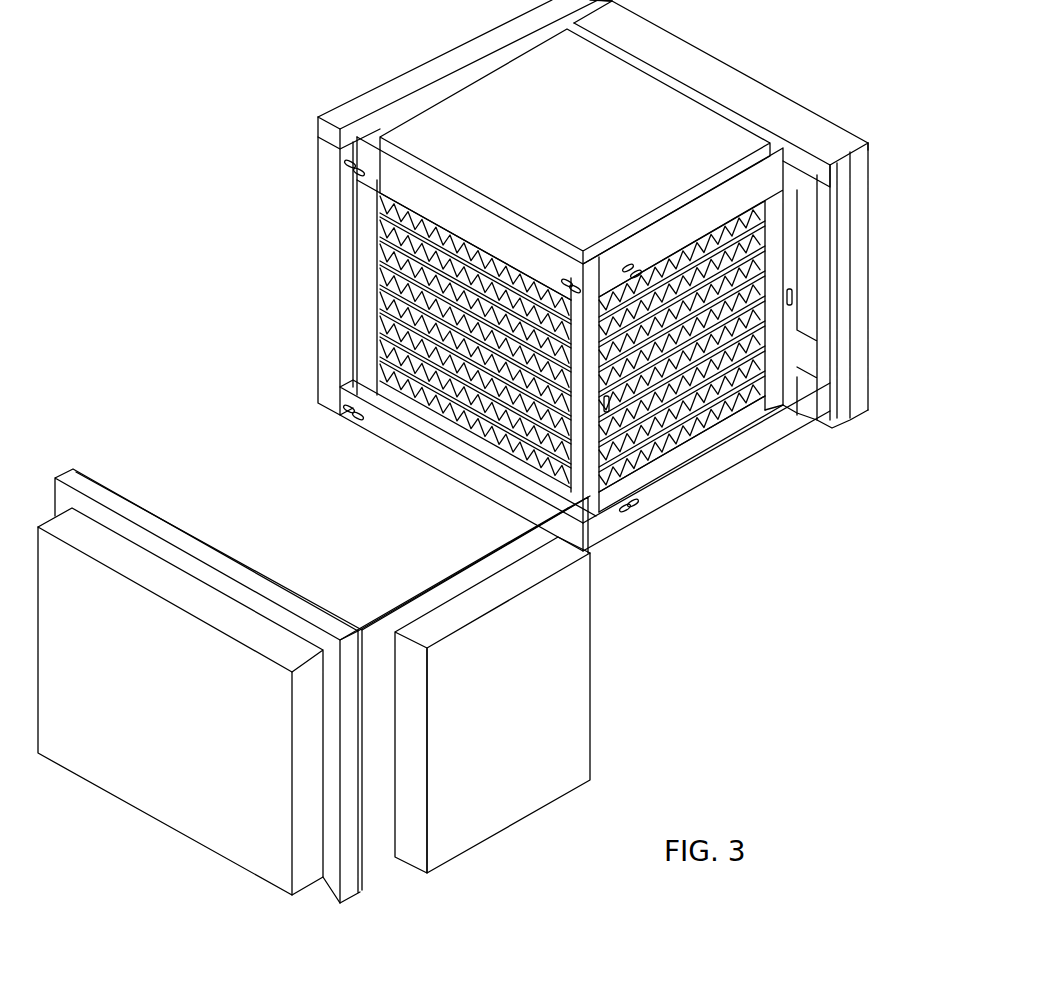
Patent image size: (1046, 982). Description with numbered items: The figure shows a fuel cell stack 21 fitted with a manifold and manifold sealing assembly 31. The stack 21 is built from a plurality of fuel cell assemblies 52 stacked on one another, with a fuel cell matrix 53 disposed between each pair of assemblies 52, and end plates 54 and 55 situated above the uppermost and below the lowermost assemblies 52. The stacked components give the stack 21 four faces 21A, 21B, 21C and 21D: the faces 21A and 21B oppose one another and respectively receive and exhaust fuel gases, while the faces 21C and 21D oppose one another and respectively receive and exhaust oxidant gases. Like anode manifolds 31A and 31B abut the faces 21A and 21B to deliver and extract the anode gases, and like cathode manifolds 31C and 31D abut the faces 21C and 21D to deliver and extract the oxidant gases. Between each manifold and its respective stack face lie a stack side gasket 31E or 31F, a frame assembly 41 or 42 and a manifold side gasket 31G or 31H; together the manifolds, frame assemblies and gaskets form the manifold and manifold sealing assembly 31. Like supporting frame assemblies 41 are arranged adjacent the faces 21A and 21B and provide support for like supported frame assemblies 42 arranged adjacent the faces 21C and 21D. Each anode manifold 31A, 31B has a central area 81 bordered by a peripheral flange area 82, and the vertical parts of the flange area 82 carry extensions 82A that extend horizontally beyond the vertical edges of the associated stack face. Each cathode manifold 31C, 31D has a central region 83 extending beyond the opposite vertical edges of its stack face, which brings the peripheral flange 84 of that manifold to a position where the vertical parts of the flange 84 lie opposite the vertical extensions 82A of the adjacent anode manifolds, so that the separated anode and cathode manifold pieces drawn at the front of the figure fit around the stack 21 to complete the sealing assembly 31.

The fuel cell stack 21 is at (752, 70).
The stack face 21A is at (775, 415).
The stack face 21B is at (405, 107).
The stack face 21C is at (432, 383).
The stack face 21D is at (675, 40).
The manifold and manifold sealing assembly 31 is at (880, 165).
The anode manifold 31A is at (563, 718).
The anode manifold 31B is at (318, 124).
The cathode manifold 31C is at (65, 735).
The cathode manifold 31D is at (778, 105).
The stack side gasket 31E is at (343, 253).
The stack side gasket 31F is at (695, 447).
The manifold side gasket 31G is at (207, 547).
The manifold side gasket 31H is at (407, 578).
The supporting frame assembly 41 is at (790, 405).
The supported frame assembly 42 is at (377, 183).
The fuel cell assembly 52 is at (372, 327).
The fuel cell matrix 53 is at (397, 365).
The end plate 54 is at (487, 90).
The end plate 55 is at (647, 463).
The central area 81 is at (532, 705).
The peripheral flange area 82 is at (461, 699).
The extension 82A is at (378, 660).
The central region 83 is at (180, 701).
The peripheral flange 84 is at (208, 686).